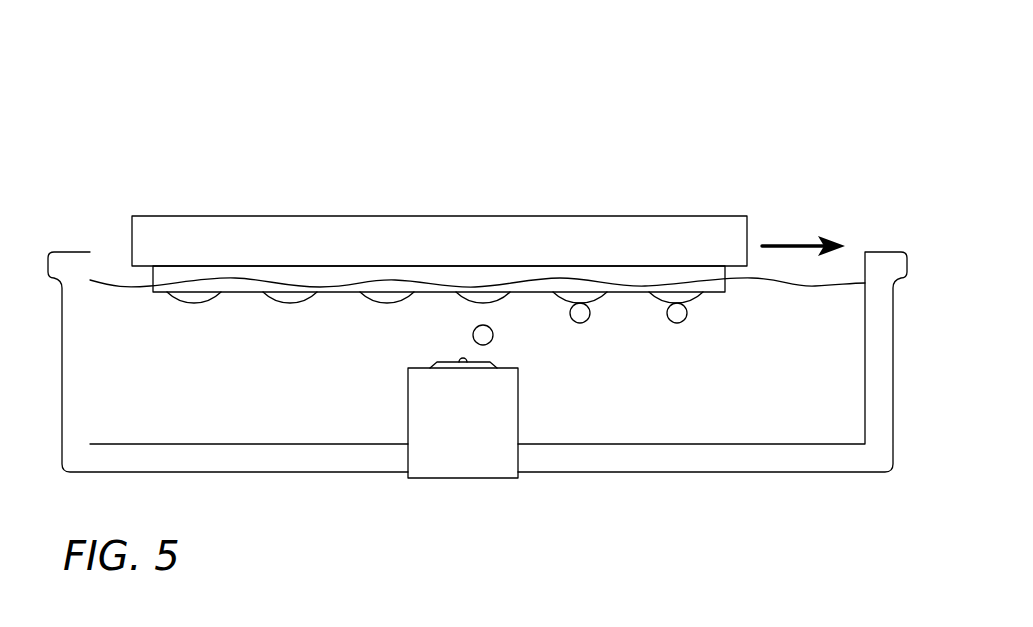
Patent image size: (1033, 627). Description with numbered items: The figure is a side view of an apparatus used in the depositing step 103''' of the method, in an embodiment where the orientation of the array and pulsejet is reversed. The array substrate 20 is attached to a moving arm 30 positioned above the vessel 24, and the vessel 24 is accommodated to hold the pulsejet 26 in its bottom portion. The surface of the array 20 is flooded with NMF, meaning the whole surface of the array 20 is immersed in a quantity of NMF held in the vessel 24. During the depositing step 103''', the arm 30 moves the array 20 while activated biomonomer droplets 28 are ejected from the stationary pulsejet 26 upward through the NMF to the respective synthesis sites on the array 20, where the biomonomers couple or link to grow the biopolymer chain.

The step of depositing 103''' is at (496, 137).
The array substrate 20 is at (683, 273).
The vessel 24 is at (83, 363).
The pulsejet 26 is at (423, 403).
The activated biomonomer droplets 28 is at (484, 335).
The moving arm 30 is at (395, 232).
The element NMF is at (650, 403).